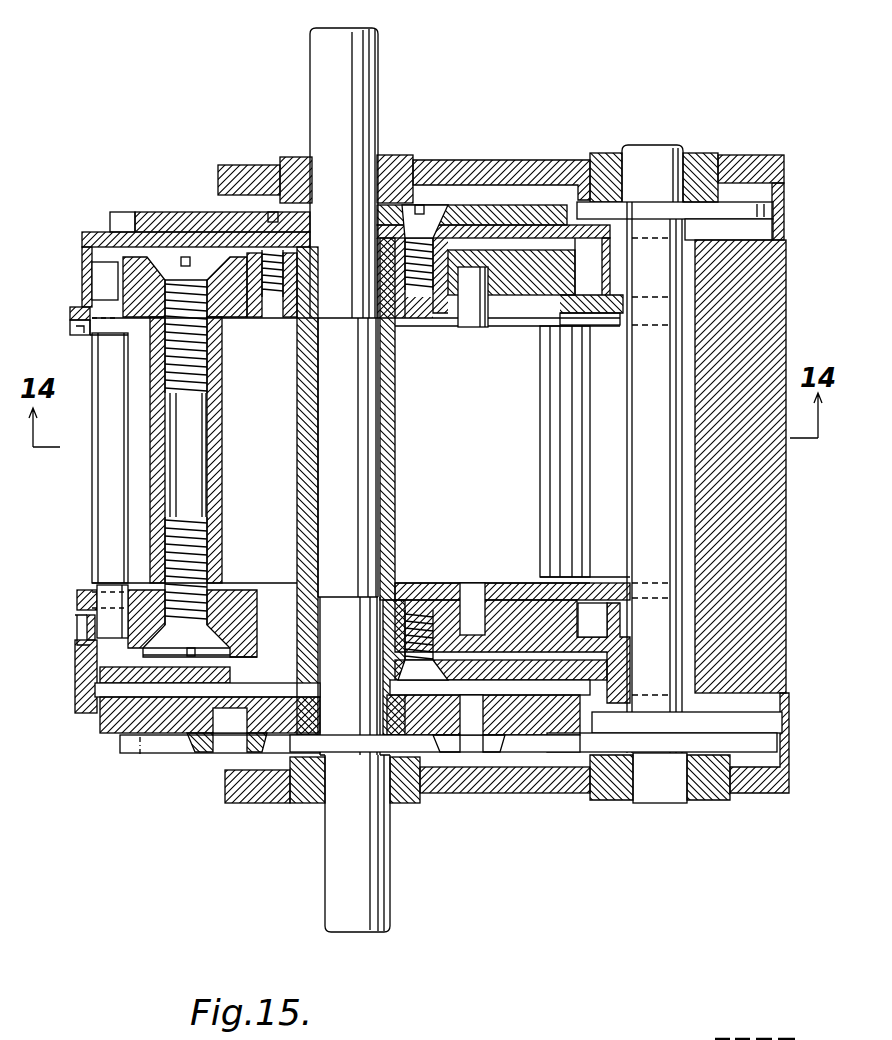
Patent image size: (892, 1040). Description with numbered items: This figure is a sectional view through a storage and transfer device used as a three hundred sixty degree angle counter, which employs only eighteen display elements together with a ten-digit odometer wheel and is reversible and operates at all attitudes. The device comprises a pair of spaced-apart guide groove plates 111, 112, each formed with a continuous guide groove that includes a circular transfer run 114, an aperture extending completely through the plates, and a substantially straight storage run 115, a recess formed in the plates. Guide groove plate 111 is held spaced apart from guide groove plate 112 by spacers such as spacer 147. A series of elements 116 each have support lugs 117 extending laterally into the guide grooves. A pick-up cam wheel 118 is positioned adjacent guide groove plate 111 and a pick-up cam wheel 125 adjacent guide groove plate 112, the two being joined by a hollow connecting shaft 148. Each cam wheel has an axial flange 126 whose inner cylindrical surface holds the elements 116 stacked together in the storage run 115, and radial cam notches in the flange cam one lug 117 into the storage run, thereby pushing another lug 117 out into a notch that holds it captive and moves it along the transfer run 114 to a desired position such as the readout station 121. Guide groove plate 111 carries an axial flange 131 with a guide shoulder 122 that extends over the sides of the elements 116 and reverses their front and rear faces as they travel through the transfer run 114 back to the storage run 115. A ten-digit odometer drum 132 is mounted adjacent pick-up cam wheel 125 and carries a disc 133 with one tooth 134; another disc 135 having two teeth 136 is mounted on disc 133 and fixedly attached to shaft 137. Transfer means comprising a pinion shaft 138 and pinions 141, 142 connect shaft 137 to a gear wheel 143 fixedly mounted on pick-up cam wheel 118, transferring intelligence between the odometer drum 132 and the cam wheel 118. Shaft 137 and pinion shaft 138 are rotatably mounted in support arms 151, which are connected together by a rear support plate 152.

The guide groove plate 111 is at (72, 312).
The guide groove plate 112 is at (78, 594).
The transfer run 114 is at (98, 295).
The storage run 115 is at (463, 288).
The elements 116 is at (100, 495).
The support lugs 117 is at (103, 270).
The pick-up cam wheel 118 is at (82, 242).
The readout station 121 is at (43, 476).
The guide shoulder 122 is at (90, 340).
The pick-up cam wheel 125 is at (113, 686).
The axial flange 126 is at (82, 618).
The axial flange 131 is at (72, 330).
The odometer drum 132 is at (76, 694).
The disc 133 is at (160, 728).
The tooth 134 is at (142, 738).
The disc 135 is at (173, 750).
The teeth 136 is at (138, 750).
The shaft 137 is at (356, 494).
The pinion shaft 138 is at (648, 554).
The pinion 141 is at (575, 752).
The pinion 142 is at (606, 208).
The gear wheel 143 is at (165, 212).
The spacer 147 is at (216, 462).
The hollow connecting shaft 148 is at (396, 452).
The support arms 151 is at (246, 170).
The rear support plate 152 is at (778, 603).